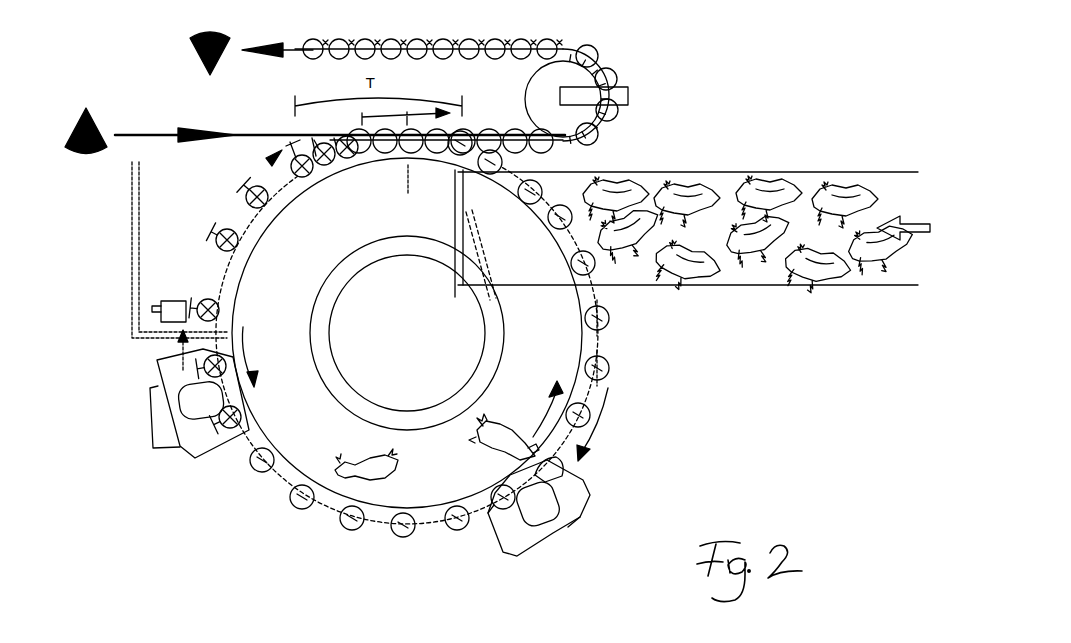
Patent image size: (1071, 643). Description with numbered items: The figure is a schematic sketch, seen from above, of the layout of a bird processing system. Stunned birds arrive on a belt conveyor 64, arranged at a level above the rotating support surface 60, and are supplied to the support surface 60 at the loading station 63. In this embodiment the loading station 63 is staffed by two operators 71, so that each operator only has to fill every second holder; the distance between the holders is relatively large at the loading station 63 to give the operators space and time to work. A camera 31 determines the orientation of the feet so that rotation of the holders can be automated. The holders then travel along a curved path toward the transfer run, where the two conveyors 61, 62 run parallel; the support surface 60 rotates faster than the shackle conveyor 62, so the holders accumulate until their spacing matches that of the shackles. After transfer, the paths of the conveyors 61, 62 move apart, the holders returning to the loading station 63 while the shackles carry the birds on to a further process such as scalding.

The camera 31 is at (165, 325).
The support surface 60 is at (307, 440).
The conveyor 61 is at (235, 182).
The shackle conveyor 62 is at (232, 128).
The loading station 63 is at (488, 537).
The belt conveyor 64 is at (855, 285).
The operators 71 is at (173, 425).